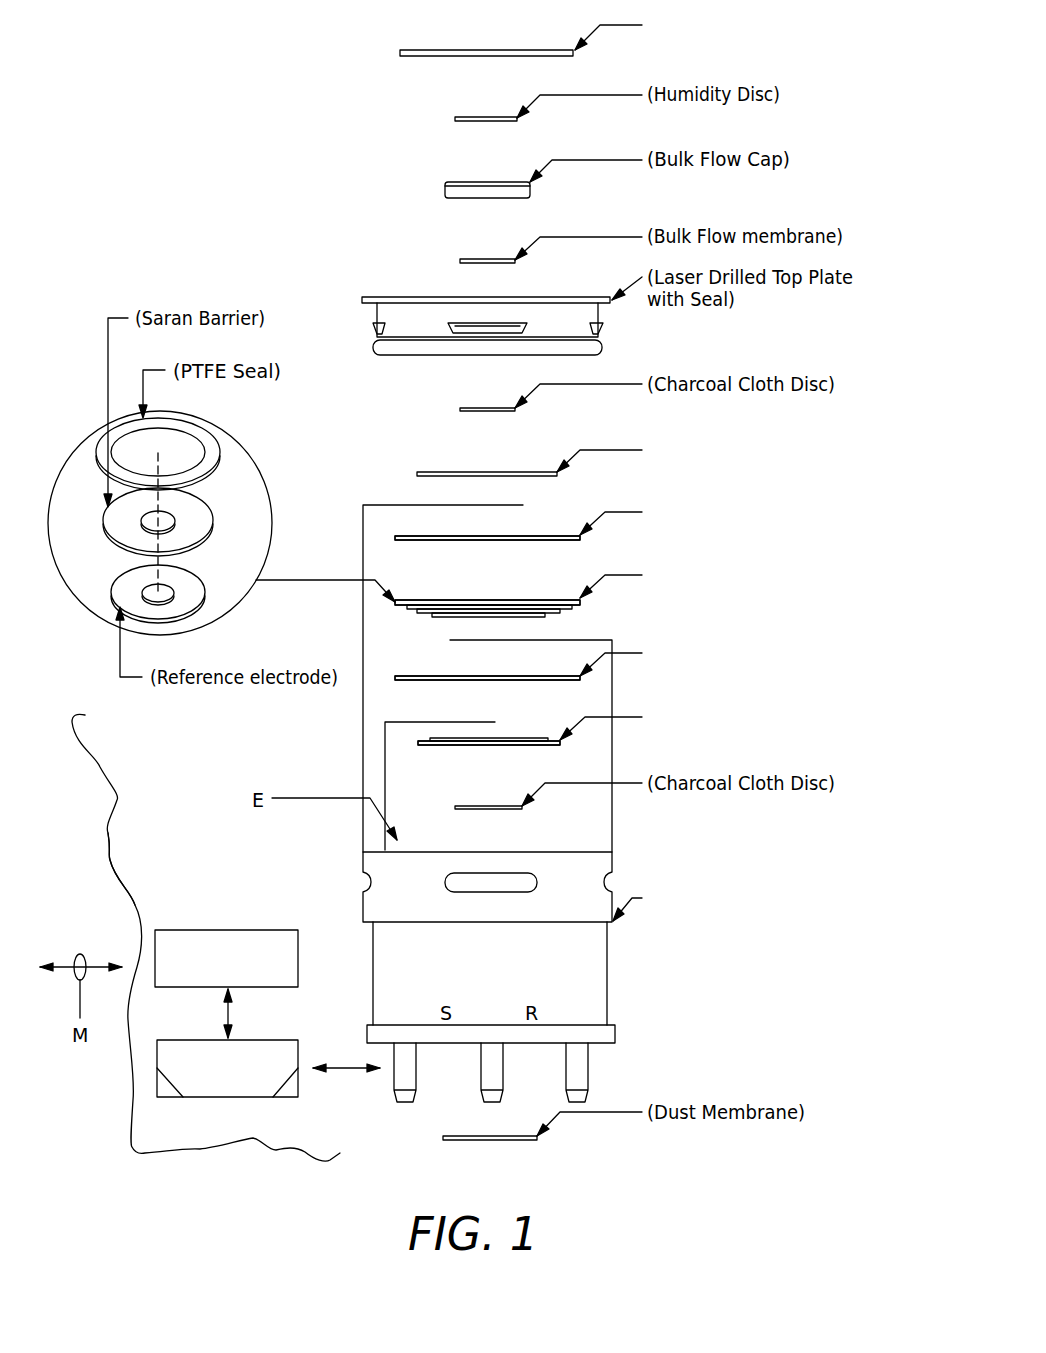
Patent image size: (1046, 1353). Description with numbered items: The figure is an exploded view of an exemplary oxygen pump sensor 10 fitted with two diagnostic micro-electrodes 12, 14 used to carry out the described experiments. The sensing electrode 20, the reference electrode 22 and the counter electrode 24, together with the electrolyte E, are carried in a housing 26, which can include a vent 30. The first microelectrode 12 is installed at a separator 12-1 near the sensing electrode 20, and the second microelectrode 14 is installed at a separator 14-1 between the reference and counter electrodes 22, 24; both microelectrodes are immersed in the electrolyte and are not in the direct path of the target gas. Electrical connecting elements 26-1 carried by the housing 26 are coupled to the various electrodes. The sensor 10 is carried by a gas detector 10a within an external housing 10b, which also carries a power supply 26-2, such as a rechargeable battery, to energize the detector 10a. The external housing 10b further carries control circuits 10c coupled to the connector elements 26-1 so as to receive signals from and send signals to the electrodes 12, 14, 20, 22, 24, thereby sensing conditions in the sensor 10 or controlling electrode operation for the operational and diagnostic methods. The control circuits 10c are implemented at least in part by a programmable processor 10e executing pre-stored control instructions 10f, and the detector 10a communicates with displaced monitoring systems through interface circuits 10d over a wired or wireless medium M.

The oxygen pump sensor 10 is at (220, 88).
The gas detector 10a is at (105, 863).
The external housing 10b is at (115, 800).
The control circuits 10c is at (295, 1040).
The interface circuits 10d is at (295, 930).
The programmable processor 10e is at (293, 1097).
The pre-stored control instructions 10f is at (168, 1097).
The diagnostic micro-electrode 12 is at (403, 540).
The separator 12-1 is at (738, 500).
The diagnostic micro-electrode 14 is at (403, 683).
The separator 14-1 is at (738, 638).
The sensing electrode 20 is at (813, 438).
The reference electrode 22 is at (855, 563).
The counter electrode 24 is at (810, 705).
The housing 26 is at (373, 965).
The electrical connecting elements 26-1 is at (625, 1070).
The power supply 26-2 is at (298, 897).
The vent 30 is at (698, 890).